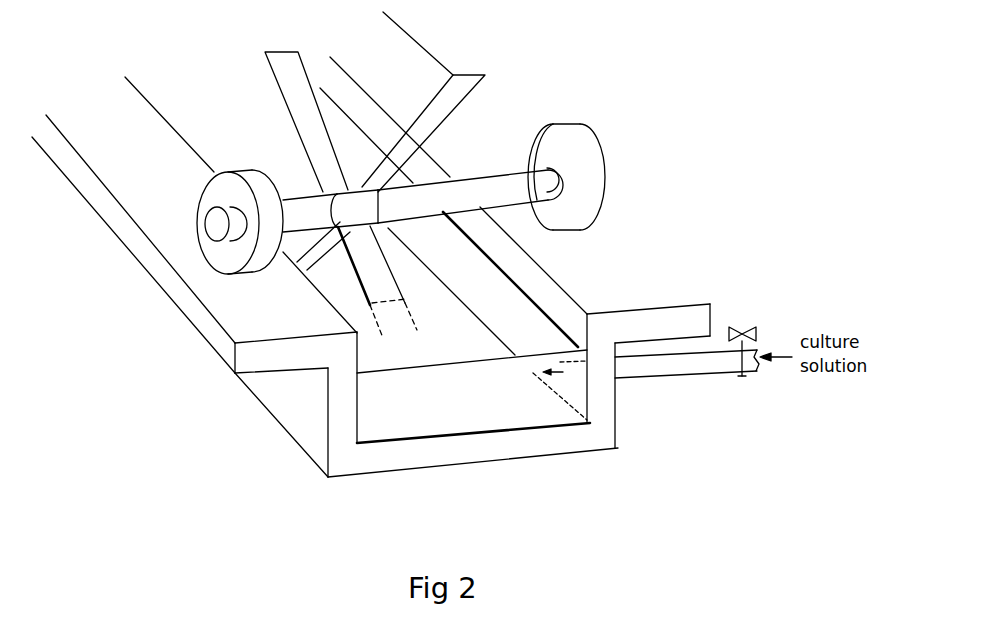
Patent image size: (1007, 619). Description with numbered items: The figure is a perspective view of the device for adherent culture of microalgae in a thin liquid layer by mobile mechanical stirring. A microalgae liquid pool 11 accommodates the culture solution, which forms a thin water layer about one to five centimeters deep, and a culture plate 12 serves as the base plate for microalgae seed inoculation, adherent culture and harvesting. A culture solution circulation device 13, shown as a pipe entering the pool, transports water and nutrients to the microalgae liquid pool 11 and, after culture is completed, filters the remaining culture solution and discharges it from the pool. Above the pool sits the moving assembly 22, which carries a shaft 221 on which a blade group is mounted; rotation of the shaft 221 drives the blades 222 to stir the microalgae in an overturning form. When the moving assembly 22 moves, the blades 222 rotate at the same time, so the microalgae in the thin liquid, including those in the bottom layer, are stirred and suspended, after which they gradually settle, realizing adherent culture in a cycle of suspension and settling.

The microalgae liquid pool 11 is at (307, 425).
The culture plate 12 is at (327, 477).
The culture solution circulation device 13 is at (723, 358).
The moving assembly 22 is at (383, 197).
The shaft 221 is at (485, 183).
The blades 222 is at (443, 112).